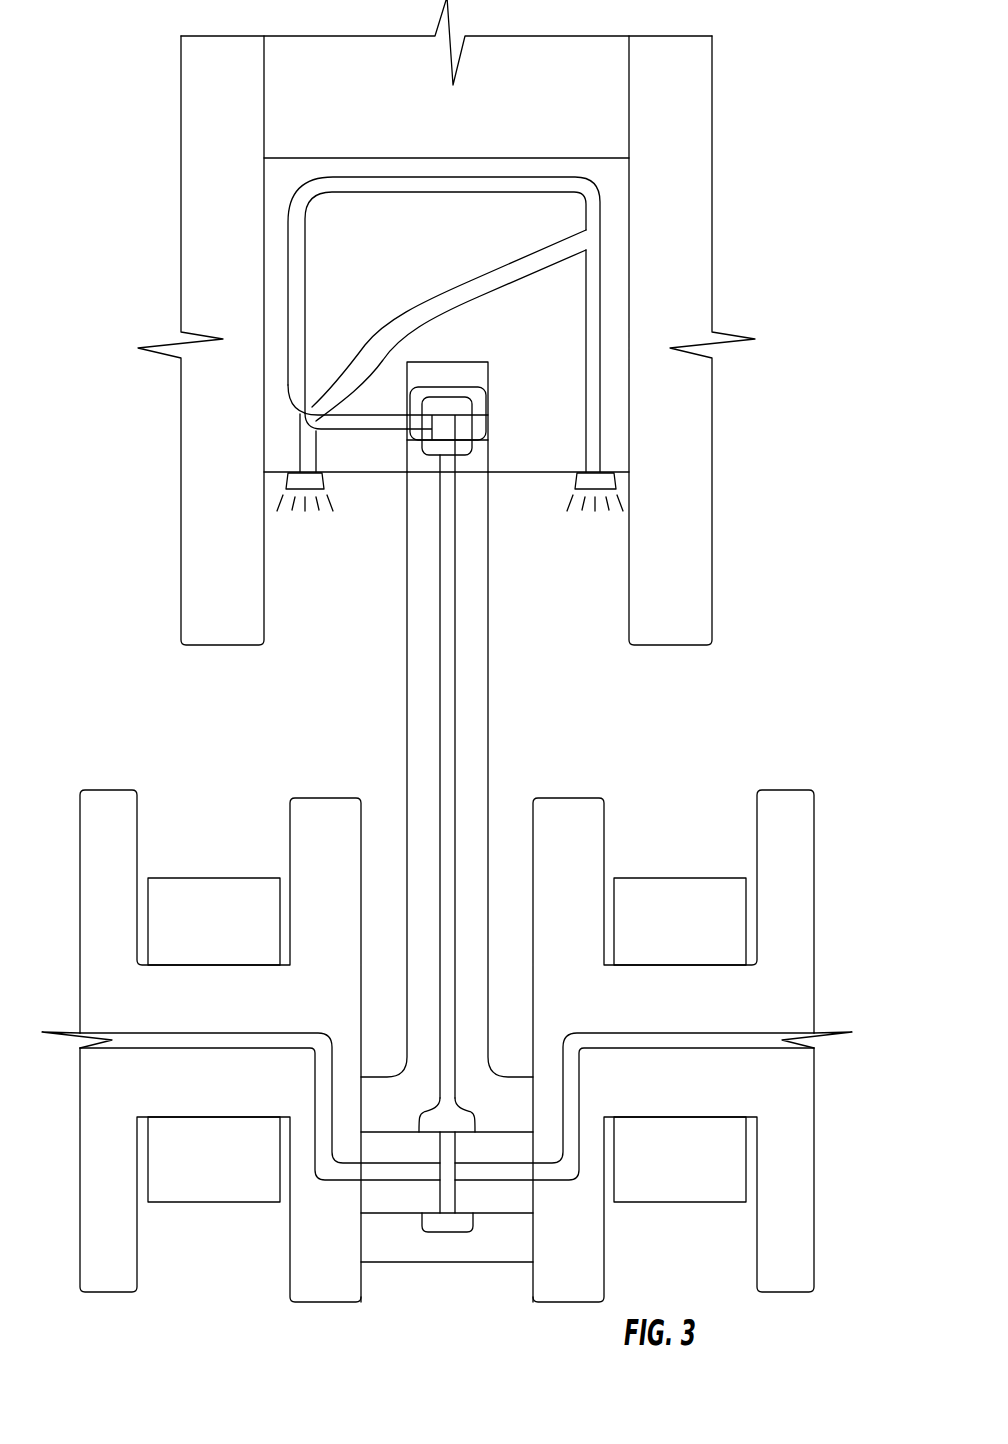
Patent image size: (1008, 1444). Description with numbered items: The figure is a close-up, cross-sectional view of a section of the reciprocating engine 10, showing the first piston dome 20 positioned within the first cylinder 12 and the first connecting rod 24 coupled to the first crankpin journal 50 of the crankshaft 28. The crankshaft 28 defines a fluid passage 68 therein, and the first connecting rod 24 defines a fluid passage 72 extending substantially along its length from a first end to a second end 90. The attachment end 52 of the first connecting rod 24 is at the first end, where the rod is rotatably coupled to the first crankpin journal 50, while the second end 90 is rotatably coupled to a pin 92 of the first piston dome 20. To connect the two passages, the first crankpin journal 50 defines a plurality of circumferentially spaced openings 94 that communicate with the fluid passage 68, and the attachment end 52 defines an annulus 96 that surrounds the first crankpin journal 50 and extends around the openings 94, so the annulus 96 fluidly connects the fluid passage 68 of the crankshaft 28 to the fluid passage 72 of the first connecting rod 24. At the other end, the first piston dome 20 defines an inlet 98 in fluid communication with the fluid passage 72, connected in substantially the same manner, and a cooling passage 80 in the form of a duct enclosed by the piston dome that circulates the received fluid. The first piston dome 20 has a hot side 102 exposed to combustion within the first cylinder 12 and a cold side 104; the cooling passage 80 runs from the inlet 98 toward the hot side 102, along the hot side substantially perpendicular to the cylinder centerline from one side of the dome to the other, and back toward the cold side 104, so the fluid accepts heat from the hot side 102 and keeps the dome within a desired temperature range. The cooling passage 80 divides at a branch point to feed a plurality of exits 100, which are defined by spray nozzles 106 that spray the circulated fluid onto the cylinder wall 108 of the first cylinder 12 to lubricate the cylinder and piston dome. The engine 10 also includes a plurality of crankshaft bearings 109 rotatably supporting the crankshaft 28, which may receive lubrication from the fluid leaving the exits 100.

The reciprocating engine 10 is at (862, 80).
The first cylinder 12 is at (698, 82).
The first piston dome 20 is at (617, 238).
The first connecting rod 24 is at (489, 717).
The crankshaft 28 is at (265, 983).
The first crankpin journal 50 is at (432, 1252).
The attachment end 52 is at (432, 1317).
The fluid passage 68 is at (271, 1050).
The fluid passage 72 is at (438, 711).
The cooling passage 80 is at (408, 182).
The second end 90 is at (507, 502).
The pin 92 is at (474, 424).
The opening 94 is at (449, 1232).
The annulus 96 is at (432, 1233).
The inlet 98 is at (395, 446).
The exit 100 is at (270, 492).
The hot side 102 is at (514, 124).
The cold side 104 is at (321, 548).
The spray nozzle 106 is at (298, 479).
The cylinder wall 108 is at (622, 570).
The crankshaft bearing 109 is at (207, 897).